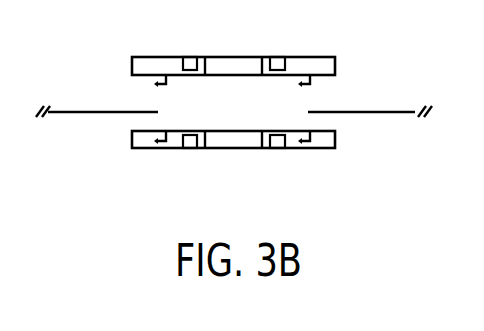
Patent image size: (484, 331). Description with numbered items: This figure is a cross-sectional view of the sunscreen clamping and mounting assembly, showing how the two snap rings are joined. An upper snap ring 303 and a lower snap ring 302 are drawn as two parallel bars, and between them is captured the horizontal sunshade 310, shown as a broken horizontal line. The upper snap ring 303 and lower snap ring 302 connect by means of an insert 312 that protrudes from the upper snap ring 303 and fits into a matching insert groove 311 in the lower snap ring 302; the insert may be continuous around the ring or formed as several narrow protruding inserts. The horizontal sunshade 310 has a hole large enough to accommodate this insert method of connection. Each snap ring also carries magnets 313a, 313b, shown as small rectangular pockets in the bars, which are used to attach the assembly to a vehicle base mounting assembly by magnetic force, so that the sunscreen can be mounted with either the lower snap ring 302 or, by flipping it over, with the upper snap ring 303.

The lower snap ring 302 is at (336, 140).
The upper snap ring 303 is at (335, 57).
The horizontal sunshade 310 is at (393, 104).
The insert groove 311 is at (303, 134).
The insert 312 is at (313, 85).
The magnet 313a is at (277, 149).
The magnet 313b is at (193, 56).